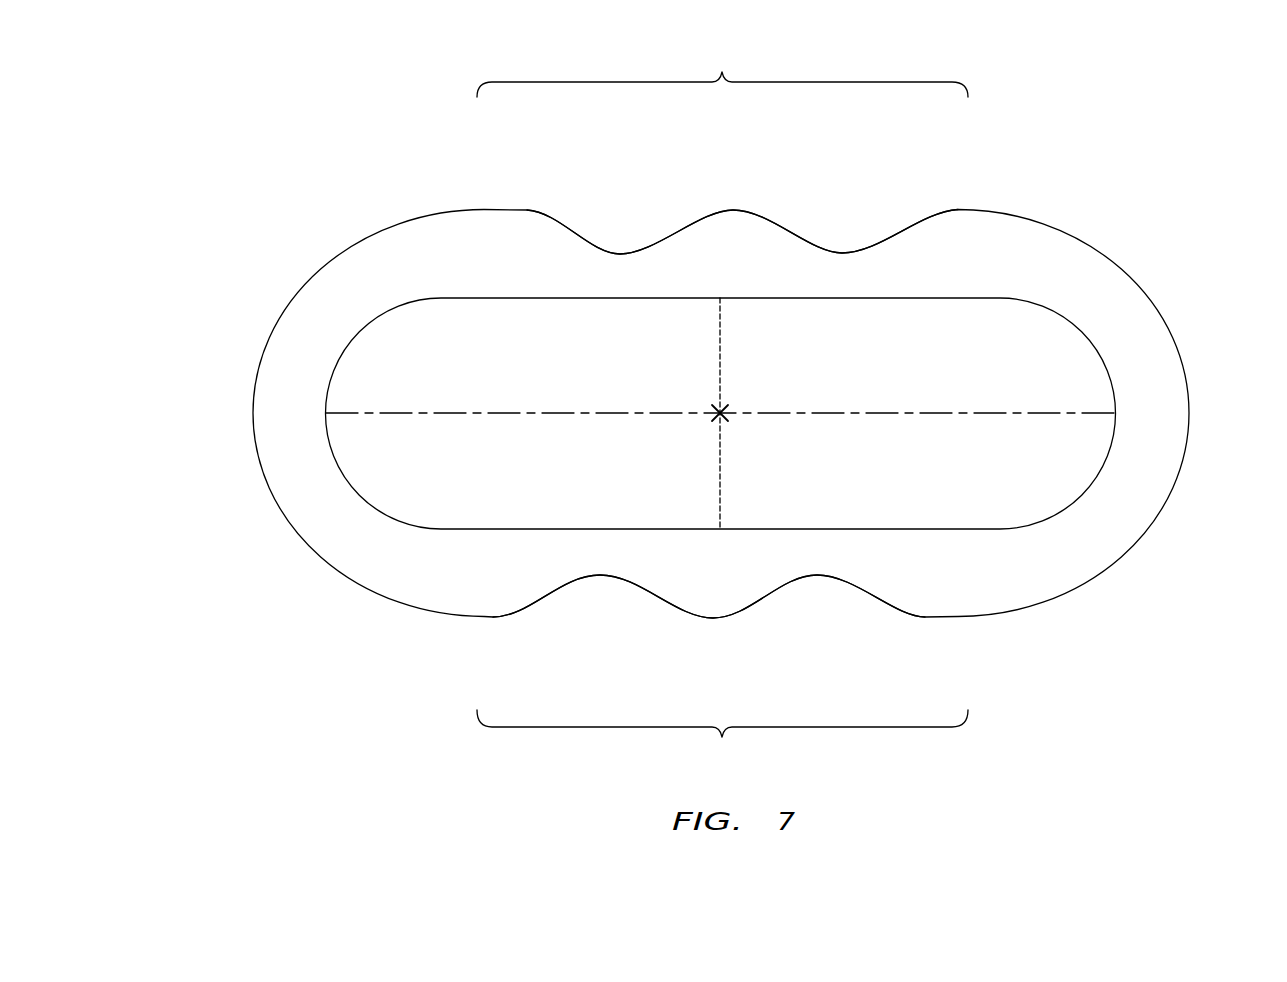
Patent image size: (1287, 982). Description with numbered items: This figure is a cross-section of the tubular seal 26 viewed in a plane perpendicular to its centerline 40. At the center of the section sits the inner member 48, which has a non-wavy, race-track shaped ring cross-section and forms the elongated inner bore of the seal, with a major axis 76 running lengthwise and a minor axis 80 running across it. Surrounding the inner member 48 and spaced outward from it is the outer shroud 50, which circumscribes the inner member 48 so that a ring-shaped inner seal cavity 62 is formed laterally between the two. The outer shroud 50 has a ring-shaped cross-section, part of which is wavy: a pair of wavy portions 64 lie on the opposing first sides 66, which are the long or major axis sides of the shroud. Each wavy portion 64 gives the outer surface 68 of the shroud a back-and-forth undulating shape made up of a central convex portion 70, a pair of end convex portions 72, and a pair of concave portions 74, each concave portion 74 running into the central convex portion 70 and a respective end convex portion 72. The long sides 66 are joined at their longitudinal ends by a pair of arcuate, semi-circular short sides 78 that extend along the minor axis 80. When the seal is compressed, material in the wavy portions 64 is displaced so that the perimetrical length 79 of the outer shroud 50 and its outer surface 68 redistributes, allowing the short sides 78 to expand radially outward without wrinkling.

The tubular seal 26 is at (1147, 140).
The centerline 40 is at (727, 418).
The inner member 48 is at (1061, 341).
The outer shroud 50 is at (1022, 208).
The inner seal cavity 62 is at (745, 276).
The wavy portion 64 is at (722, 406).
The first side 66 is at (785, 178).
The outer surface 68 is at (649, 599).
The central convex portion 70 is at (736, 210).
The end convex portion 72 is at (542, 214).
The concave portion 74 is at (620, 253).
The major axis 76 is at (592, 414).
The short side 78 is at (1209, 383).
The perimetrical length 79 is at (1073, 593).
The minor axis 80 is at (723, 338).